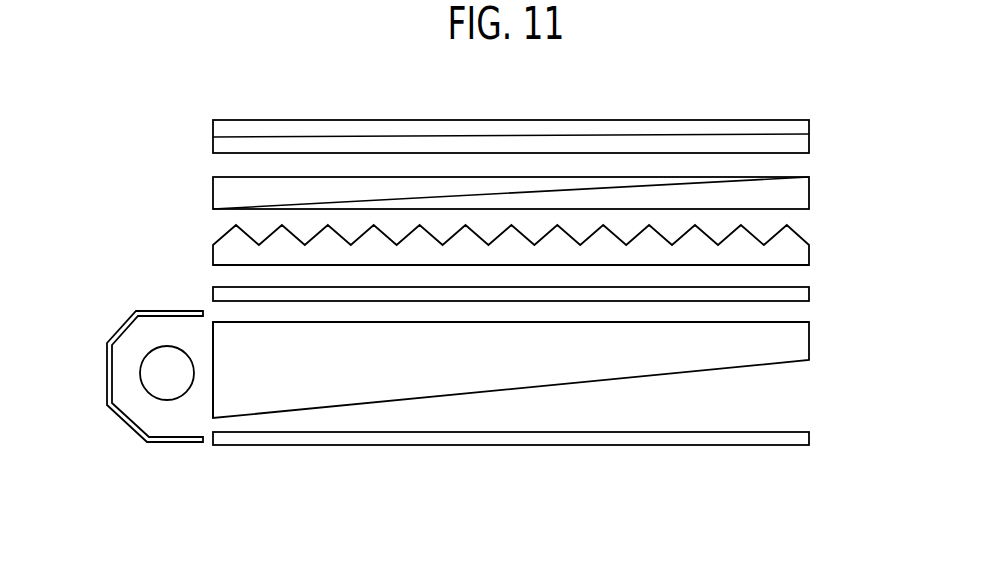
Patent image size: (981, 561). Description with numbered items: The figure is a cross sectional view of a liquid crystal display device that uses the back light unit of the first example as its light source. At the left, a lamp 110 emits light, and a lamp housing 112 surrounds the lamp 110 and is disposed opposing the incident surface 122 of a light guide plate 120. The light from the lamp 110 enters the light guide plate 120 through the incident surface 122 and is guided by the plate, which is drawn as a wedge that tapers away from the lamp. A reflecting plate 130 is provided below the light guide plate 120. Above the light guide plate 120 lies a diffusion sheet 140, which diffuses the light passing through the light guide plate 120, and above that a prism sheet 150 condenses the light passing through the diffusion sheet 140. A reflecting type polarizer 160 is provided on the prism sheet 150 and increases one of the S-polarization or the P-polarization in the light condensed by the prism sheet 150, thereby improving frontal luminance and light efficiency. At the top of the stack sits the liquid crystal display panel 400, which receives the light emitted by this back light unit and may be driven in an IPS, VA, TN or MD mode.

The liquid crystal display panel 400 is at (809, 134).
The reflecting type polarizer 160 is at (802, 196).
The prism sheet 150 is at (802, 256).
The diffusion sheet 140 is at (802, 297).
The light guide plate 120 is at (802, 338).
The reflecting plate 130 is at (583, 438).
The lamp 110 is at (165, 352).
The lamp housing 112 is at (112, 373).
The incident surface 122 is at (213, 392).